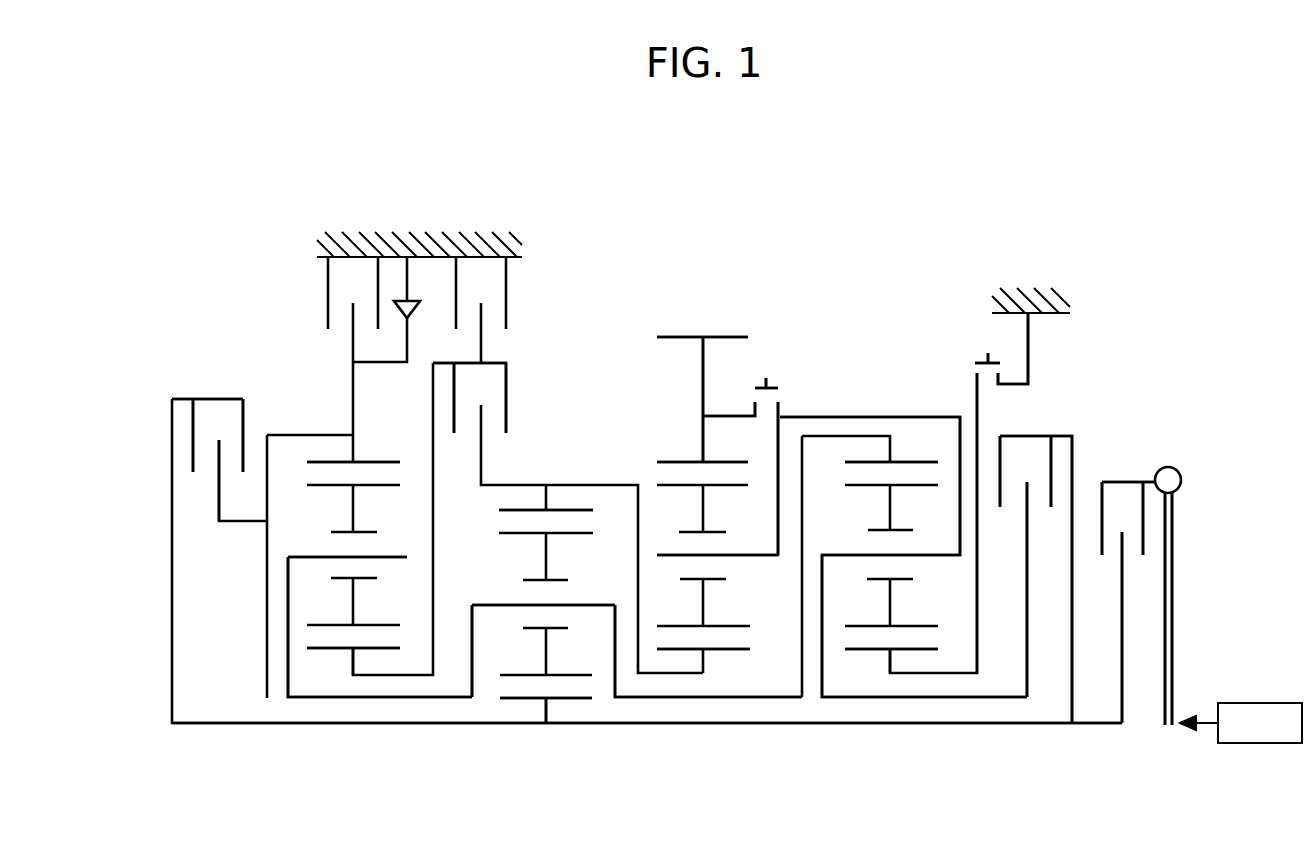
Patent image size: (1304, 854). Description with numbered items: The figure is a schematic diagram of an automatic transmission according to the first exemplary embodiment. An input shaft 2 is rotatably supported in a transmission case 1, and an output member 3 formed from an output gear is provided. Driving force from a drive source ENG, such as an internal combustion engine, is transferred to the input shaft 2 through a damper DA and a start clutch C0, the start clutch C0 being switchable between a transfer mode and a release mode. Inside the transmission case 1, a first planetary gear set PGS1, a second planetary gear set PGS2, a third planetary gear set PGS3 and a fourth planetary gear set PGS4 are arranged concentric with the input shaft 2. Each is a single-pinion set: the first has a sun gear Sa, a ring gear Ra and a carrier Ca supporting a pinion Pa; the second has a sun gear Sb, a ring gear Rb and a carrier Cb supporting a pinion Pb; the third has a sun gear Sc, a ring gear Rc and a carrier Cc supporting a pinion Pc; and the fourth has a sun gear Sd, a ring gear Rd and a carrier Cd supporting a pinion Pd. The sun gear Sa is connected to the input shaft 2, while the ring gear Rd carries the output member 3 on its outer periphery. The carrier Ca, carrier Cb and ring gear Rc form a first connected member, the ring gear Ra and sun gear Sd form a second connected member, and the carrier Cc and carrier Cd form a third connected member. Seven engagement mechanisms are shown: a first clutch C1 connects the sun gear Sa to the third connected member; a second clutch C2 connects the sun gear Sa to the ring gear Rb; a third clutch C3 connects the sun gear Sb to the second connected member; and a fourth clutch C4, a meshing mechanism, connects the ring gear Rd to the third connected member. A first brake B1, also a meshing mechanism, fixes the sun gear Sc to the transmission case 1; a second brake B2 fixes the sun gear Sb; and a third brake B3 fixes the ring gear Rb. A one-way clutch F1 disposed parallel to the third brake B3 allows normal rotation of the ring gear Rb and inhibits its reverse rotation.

The transmission case 1 is at (357, 245).
The input shaft 2 is at (1033, 725).
The output member 3 is at (746, 335).
The drive source ENG is at (1241, 723).
The damper DA is at (1183, 470).
The one-way clutch F1 is at (415, 293).
The first brake B1 is at (986, 348).
The second brake B2 is at (481, 310).
The third brake B3 is at (353, 293).
The start clutch C0 is at (1128, 602).
The first clutch C1 is at (1036, 579).
The second clutch C2 is at (207, 460).
The third clutch C3 is at (469, 398).
The fourth clutch C4 is at (770, 367).
The first planetary gear set PGS1 is at (527, 702).
The second planetary gear set PGS2 is at (333, 672).
The third planetary gear set PGS3 is at (880, 678).
The fourth planetary gear set PGS4 is at (684, 678).
The sun gear Sa is at (565, 700).
The ring gear Ra is at (527, 508).
The carrier Ca is at (598, 603).
The pinion Pa is at (513, 683).
The sun gear Sb is at (367, 652).
The ring gear Rb is at (326, 460).
The carrier Cb is at (407, 557).
The pinion Pb is at (322, 627).
The sun gear Sc is at (912, 652).
The ring gear Rc is at (865, 460).
The carrier Cc is at (933, 557).
The pinion Pc is at (920, 627).
The sun gear Sd is at (723, 652).
The ring gear Rd is at (672, 460).
The carrier Cd is at (750, 557).
The pinion Pd is at (732, 627).